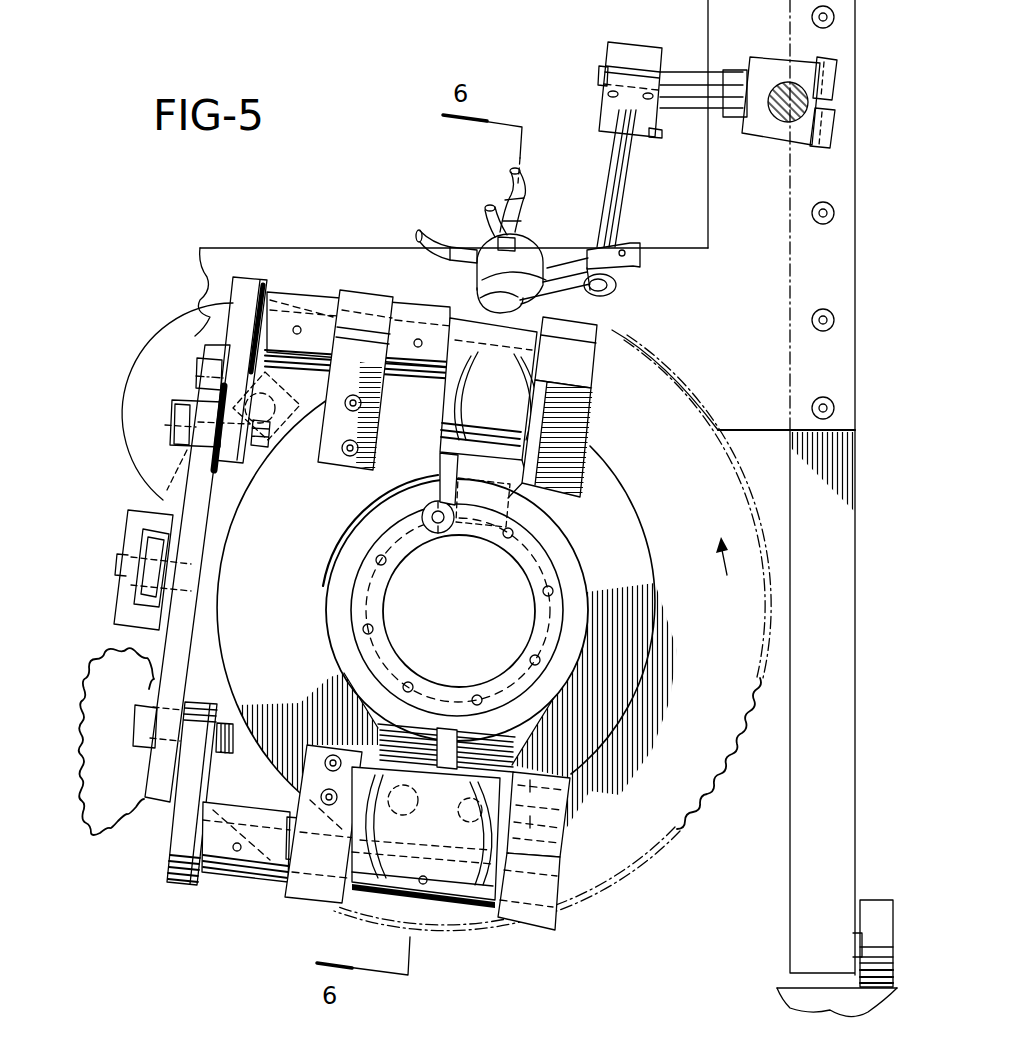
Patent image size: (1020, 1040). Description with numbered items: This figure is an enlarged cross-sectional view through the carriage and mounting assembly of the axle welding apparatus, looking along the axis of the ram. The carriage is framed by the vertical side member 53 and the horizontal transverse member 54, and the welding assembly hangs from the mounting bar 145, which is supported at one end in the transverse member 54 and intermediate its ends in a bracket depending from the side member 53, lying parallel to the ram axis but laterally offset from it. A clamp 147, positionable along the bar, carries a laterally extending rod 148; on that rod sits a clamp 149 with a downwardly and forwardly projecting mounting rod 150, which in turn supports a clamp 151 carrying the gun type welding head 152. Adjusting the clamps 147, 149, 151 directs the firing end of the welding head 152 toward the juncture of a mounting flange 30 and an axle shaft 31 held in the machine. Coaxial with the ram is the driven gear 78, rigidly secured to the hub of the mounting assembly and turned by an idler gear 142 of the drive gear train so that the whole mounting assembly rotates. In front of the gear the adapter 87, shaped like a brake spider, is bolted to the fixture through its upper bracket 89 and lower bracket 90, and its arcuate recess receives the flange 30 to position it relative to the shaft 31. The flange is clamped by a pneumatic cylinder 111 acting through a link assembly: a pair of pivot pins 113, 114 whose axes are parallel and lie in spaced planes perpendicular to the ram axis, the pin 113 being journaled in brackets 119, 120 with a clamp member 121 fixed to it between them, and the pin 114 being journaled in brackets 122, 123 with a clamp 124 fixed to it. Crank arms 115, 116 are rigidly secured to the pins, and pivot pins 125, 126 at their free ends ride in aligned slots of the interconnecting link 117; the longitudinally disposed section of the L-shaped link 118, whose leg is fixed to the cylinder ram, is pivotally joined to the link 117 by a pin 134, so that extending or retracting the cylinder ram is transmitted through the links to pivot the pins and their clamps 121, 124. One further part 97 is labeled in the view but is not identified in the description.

The mounting flange 30 is at (548, 630).
The axle shaft 31 is at (535, 603).
The vertical side member 53 is at (845, 560).
The horizontal transverse member 54 is at (306, 249).
The gear 78 is at (683, 402).
The adapter 87 is at (568, 558).
The upper bracket 89 is at (510, 486).
The lower bracket 90 is at (426, 833).
The pivot pin 97 is at (437, 533).
The pneumatic cylinder 111 is at (182, 338).
The pivot pin 113 is at (600, 380).
The pivot pin 114 is at (567, 880).
The crank arm 115 is at (230, 387).
The crank arm 116 is at (170, 873).
The interconnecting link 117 is at (193, 483).
The L-shaped link 118 is at (155, 550).
The bracket 119 is at (363, 292).
The bracket 120 is at (600, 330).
The clamp member 121 is at (440, 425).
The bracket 122 is at (283, 887).
The bracket 123 is at (565, 812).
The clamp 124 is at (457, 907).
The pivot pin 125 is at (170, 442).
The pivot pin 126 is at (232, 748).
The pin 134 is at (147, 598).
The idler gear 142 is at (100, 765).
The mounting bar 145 is at (786, 80).
The clamp 147 is at (768, 133).
The laterally extending rod 148 is at (670, 112).
The clamp 149 is at (600, 108).
The mounting rod 150 is at (626, 200).
The clamp 151 is at (628, 286).
The gun type welding head 152 is at (470, 283).